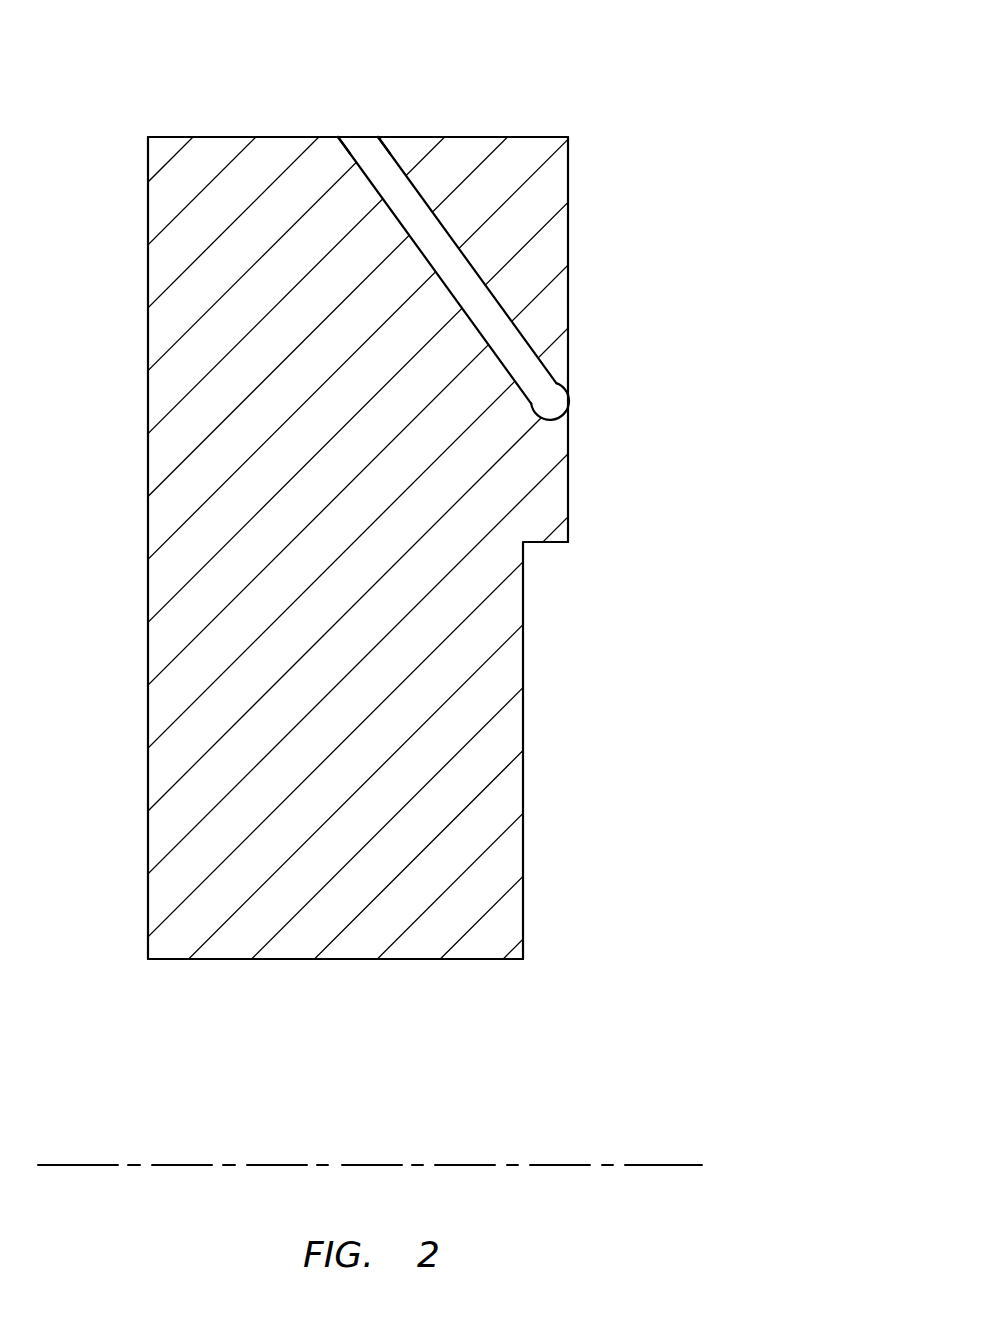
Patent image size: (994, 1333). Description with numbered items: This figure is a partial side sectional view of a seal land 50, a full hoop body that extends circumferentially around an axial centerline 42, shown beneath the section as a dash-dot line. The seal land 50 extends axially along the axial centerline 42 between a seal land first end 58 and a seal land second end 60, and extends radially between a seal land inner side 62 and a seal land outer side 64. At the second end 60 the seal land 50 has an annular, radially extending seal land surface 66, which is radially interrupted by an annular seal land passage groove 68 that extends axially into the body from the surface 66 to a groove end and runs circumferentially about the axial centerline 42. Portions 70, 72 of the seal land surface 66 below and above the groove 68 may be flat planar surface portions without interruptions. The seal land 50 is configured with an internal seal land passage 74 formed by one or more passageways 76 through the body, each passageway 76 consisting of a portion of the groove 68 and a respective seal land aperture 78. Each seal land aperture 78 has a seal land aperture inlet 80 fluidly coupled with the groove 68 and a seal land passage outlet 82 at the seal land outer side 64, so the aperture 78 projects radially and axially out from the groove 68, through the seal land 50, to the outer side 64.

The axial centerline 42 is at (670, 1160).
The seal land 50 is at (497, 527).
The seal land first end 58 is at (147, 420).
The seal land second end 60 is at (571, 478).
The seal land inner side 62 is at (278, 960).
The seal land outer side 64 is at (255, 137).
The seal land surface 66 is at (580, 320).
The seal land passage groove 68 is at (558, 408).
The seal land surface portion 70 is at (595, 517).
The seal land surface portion 72 is at (580, 253).
The seal land passage 74 is at (453, 240).
The passageway 76 is at (398, 178).
The seal land aperture 78 is at (430, 245).
The seal land aperture inlet 80 is at (567, 383).
The seal land passage outlet 82 is at (356, 137).